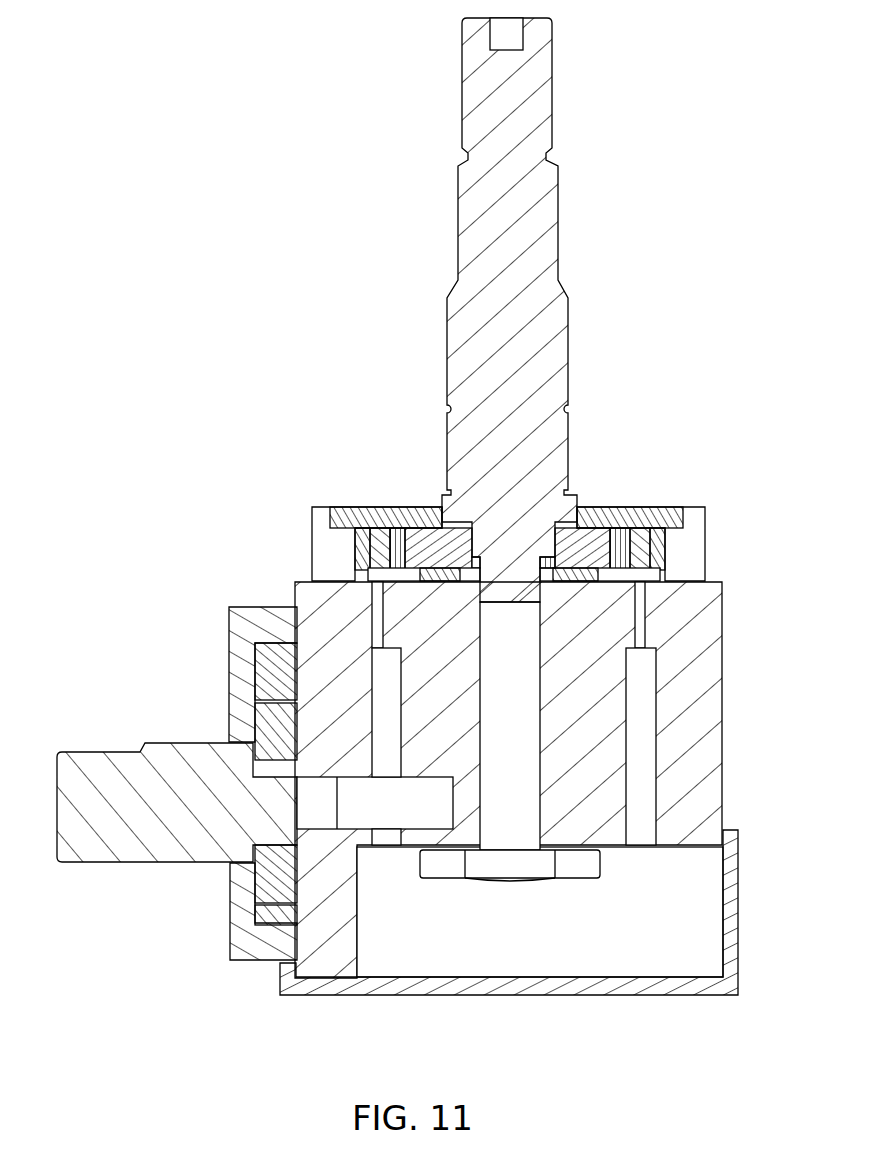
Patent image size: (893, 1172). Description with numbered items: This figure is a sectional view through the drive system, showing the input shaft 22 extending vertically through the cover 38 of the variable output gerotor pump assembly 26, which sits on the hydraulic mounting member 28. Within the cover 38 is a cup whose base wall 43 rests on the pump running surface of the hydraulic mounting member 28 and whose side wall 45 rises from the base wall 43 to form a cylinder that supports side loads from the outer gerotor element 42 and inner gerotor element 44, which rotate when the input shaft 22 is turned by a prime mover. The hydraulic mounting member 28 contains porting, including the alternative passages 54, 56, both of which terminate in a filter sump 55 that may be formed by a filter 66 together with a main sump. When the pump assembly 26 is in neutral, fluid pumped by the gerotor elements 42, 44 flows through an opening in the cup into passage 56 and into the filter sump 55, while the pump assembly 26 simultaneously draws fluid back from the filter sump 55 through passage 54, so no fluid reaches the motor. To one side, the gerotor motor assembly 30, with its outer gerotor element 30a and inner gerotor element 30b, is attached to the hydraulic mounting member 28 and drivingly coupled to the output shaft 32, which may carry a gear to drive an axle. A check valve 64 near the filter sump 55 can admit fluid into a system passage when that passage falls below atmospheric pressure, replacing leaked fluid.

The input shaft 22 is at (553, 85).
The variable output gerotor pump assembly 26 is at (524, 512).
The hydraulic mounting member 28 is at (723, 778).
The gerotor motor assembly 30 is at (207, 647).
The outer gerotor element 30a is at (275, 690).
The inner gerotor element 30b is at (273, 727).
The output shaft 32 is at (56, 770).
The cover 38 is at (312, 546).
The outer gerotor element 42 is at (640, 535).
The base wall 43 is at (646, 588).
The inner gerotor element 44 is at (596, 540).
The side wall 45 is at (665, 560).
The passage 54 is at (642, 612).
The filter sump 55 is at (522, 941).
The passage 56 is at (393, 672).
The check valve 64 is at (560, 880).
The filter 66 is at (650, 996).